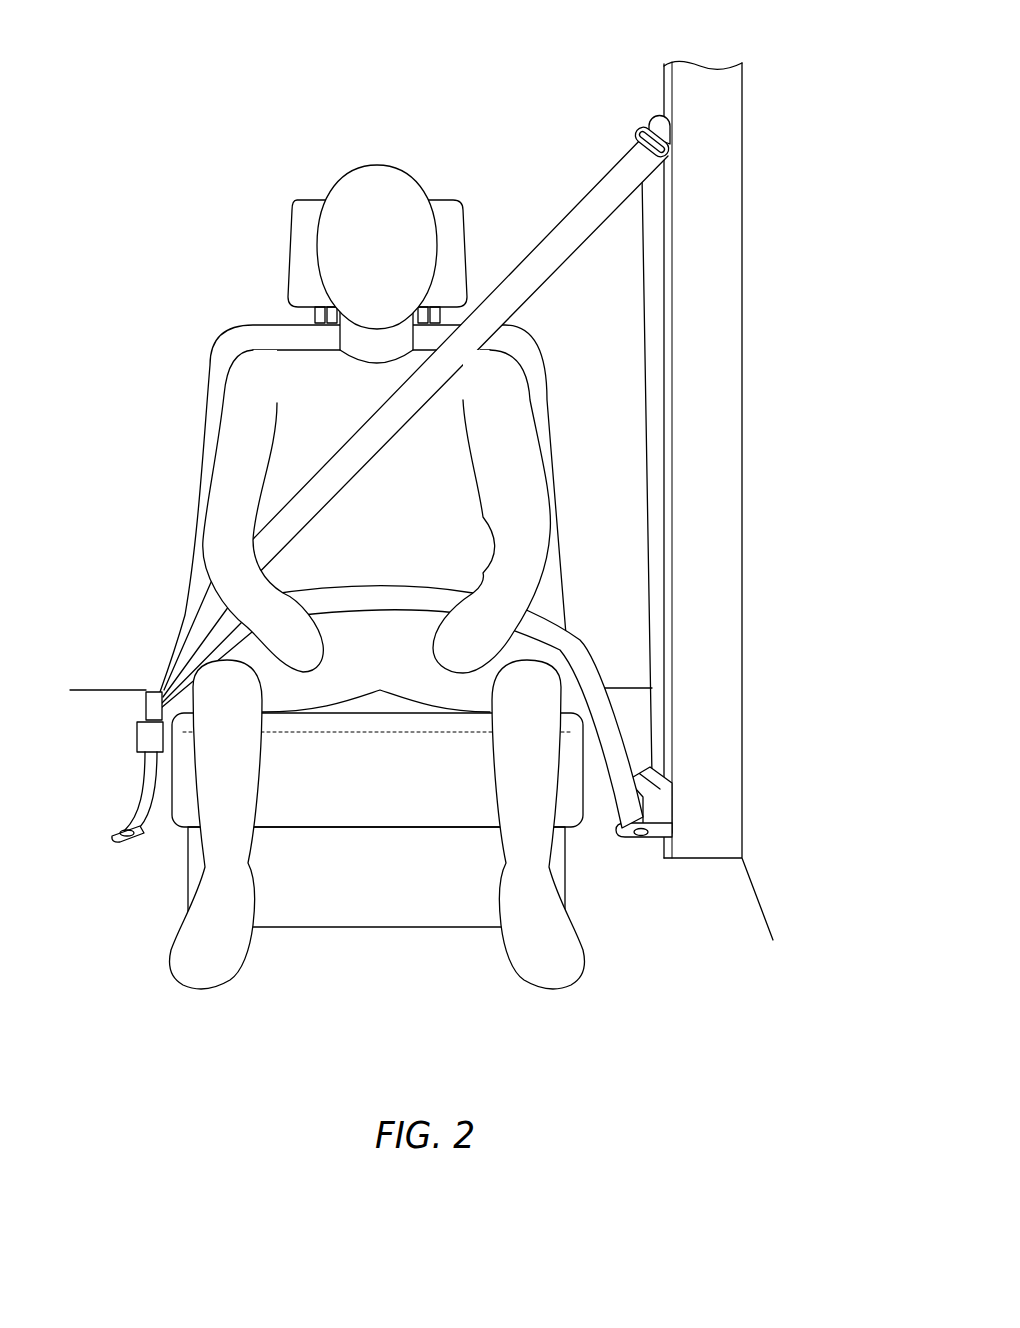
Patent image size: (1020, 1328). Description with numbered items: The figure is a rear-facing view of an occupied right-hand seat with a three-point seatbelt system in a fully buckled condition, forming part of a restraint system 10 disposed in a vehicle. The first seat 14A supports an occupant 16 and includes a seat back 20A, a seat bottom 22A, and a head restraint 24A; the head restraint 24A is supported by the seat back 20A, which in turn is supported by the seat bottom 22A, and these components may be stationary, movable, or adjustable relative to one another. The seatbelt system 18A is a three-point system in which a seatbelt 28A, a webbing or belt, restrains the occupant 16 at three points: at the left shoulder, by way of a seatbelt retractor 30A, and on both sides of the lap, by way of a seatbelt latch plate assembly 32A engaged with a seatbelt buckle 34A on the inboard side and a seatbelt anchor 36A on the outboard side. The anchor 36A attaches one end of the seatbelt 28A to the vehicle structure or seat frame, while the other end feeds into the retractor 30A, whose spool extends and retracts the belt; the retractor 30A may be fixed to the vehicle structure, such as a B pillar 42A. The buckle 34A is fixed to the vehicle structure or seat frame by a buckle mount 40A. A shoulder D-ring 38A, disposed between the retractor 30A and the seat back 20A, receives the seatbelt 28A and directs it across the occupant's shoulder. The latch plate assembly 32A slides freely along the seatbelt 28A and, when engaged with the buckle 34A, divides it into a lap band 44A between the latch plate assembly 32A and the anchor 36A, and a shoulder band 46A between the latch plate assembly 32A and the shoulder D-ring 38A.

The restraint system 10 is at (579, 49).
The first seat 14A is at (367, 553).
The occupant 16 is at (205, 502).
The seatbelt system 18A is at (414, 477).
The seat back 20A is at (207, 380).
The seat bottom 22A is at (177, 830).
The head restraint 24A is at (294, 220).
The seatbelt 28A is at (673, 318).
The seatbelt retractor 30A is at (675, 810).
The seatbelt latch plate assembly 32A is at (146, 700).
The seatbelt buckle 34A is at (137, 737).
The seatbelt anchor 36A is at (645, 840).
The shoulder D-ring 38A is at (635, 132).
The buckle mount 40A is at (122, 830).
The B pillar 42A is at (745, 164).
The lap band 44A is at (380, 585).
The shoulder band 46A is at (559, 275).